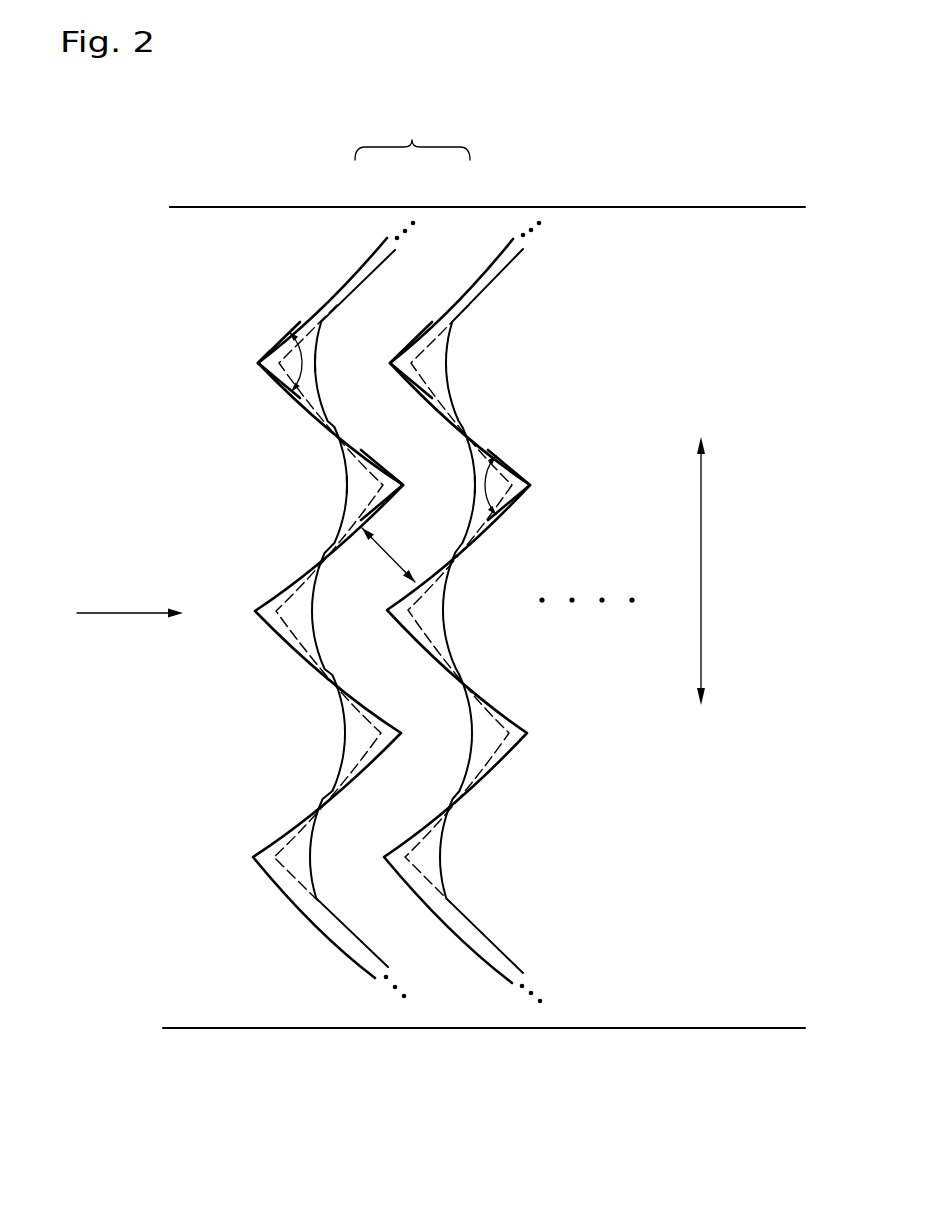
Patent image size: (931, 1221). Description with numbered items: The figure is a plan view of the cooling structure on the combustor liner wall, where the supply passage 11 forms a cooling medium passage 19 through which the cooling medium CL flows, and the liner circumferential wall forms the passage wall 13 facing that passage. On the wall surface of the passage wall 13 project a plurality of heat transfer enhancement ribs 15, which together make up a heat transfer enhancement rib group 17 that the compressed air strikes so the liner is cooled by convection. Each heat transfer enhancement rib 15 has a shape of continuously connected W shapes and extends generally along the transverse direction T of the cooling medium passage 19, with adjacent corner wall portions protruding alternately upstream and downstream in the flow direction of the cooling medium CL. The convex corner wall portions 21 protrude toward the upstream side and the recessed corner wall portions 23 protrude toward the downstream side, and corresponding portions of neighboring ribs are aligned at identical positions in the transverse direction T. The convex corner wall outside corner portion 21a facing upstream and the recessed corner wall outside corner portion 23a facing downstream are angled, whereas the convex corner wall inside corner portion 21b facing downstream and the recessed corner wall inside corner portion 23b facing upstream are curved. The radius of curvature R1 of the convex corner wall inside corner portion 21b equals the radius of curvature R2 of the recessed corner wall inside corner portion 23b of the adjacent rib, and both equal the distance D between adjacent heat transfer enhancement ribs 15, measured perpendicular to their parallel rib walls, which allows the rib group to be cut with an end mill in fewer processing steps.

The supply passage 11 is at (285, 582).
The passage wall 13 is at (637, 1028).
The heat transfer enhancement rib 15 is at (363, 258).
The heat transfer enhancement rib group 17 is at (412, 136).
The cooling medium passage 19 is at (206, 958).
The convex corner wall portion 21 is at (268, 357).
The convex corner wall outside corner portion 21a is at (257, 363).
The convex corner wall inside corner portion 21b is at (316, 367).
The recessed corner wall portion 23 is at (381, 463).
The recessed corner wall outside corner portion 23a is at (403, 486).
The recessed corner wall inside corner portion 23b is at (346, 488).
The radius of curvature of convex corner wall inside corner portion R1 is at (318, 337).
The radius of curvature of recessed corner wall inside corner portion R2 is at (475, 473).
The distance between adjacent heat transfer enhancement ribs D is at (386, 556).
The transverse direction of cooling medium passage T is at (701, 557).
The cooling medium CL is at (118, 612).